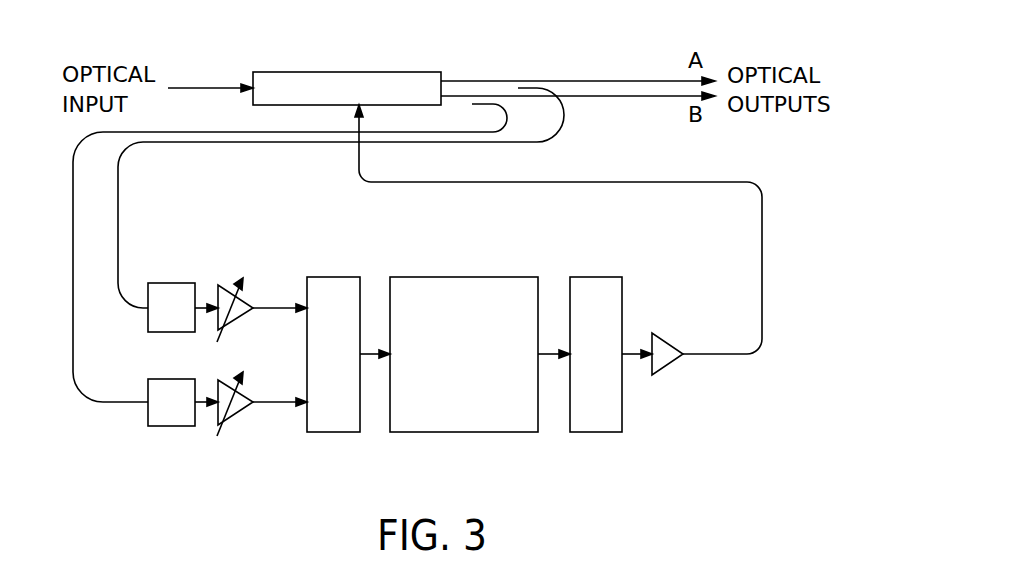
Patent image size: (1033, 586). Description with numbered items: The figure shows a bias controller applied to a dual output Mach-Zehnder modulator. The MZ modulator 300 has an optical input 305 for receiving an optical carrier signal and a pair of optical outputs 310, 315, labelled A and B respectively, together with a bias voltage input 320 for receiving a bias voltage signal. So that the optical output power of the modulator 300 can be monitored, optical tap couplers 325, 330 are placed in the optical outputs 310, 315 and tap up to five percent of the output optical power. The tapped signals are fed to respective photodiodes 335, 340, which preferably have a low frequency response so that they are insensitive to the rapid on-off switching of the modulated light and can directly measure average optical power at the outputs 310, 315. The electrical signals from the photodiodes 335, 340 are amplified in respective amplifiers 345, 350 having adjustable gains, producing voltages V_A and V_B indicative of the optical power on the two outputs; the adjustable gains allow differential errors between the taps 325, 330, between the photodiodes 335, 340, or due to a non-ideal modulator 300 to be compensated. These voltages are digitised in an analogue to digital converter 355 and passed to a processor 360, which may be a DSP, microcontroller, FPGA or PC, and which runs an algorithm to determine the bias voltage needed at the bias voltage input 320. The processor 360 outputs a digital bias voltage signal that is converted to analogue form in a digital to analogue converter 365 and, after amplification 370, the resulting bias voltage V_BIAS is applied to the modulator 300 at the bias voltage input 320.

The MZ modulator 300 is at (300, 72).
The optical input 305 is at (206, 87).
The optical output 310 is at (622, 80).
The optical output 315 is at (620, 97).
The bias voltage input 320 is at (357, 127).
The optical tap coupler 325 is at (529, 77).
The optical tap coupler 330 is at (475, 118).
The photodiode 335 is at (166, 283).
The photodiode 340 is at (170, 427).
The amplifier 345 is at (228, 287).
The amplifier 350 is at (240, 419).
The analogue to digital converter 355 is at (337, 433).
The processor 360 is at (470, 277).
The digital to analogue converter 365 is at (597, 277).
The amplification 370 is at (670, 366).